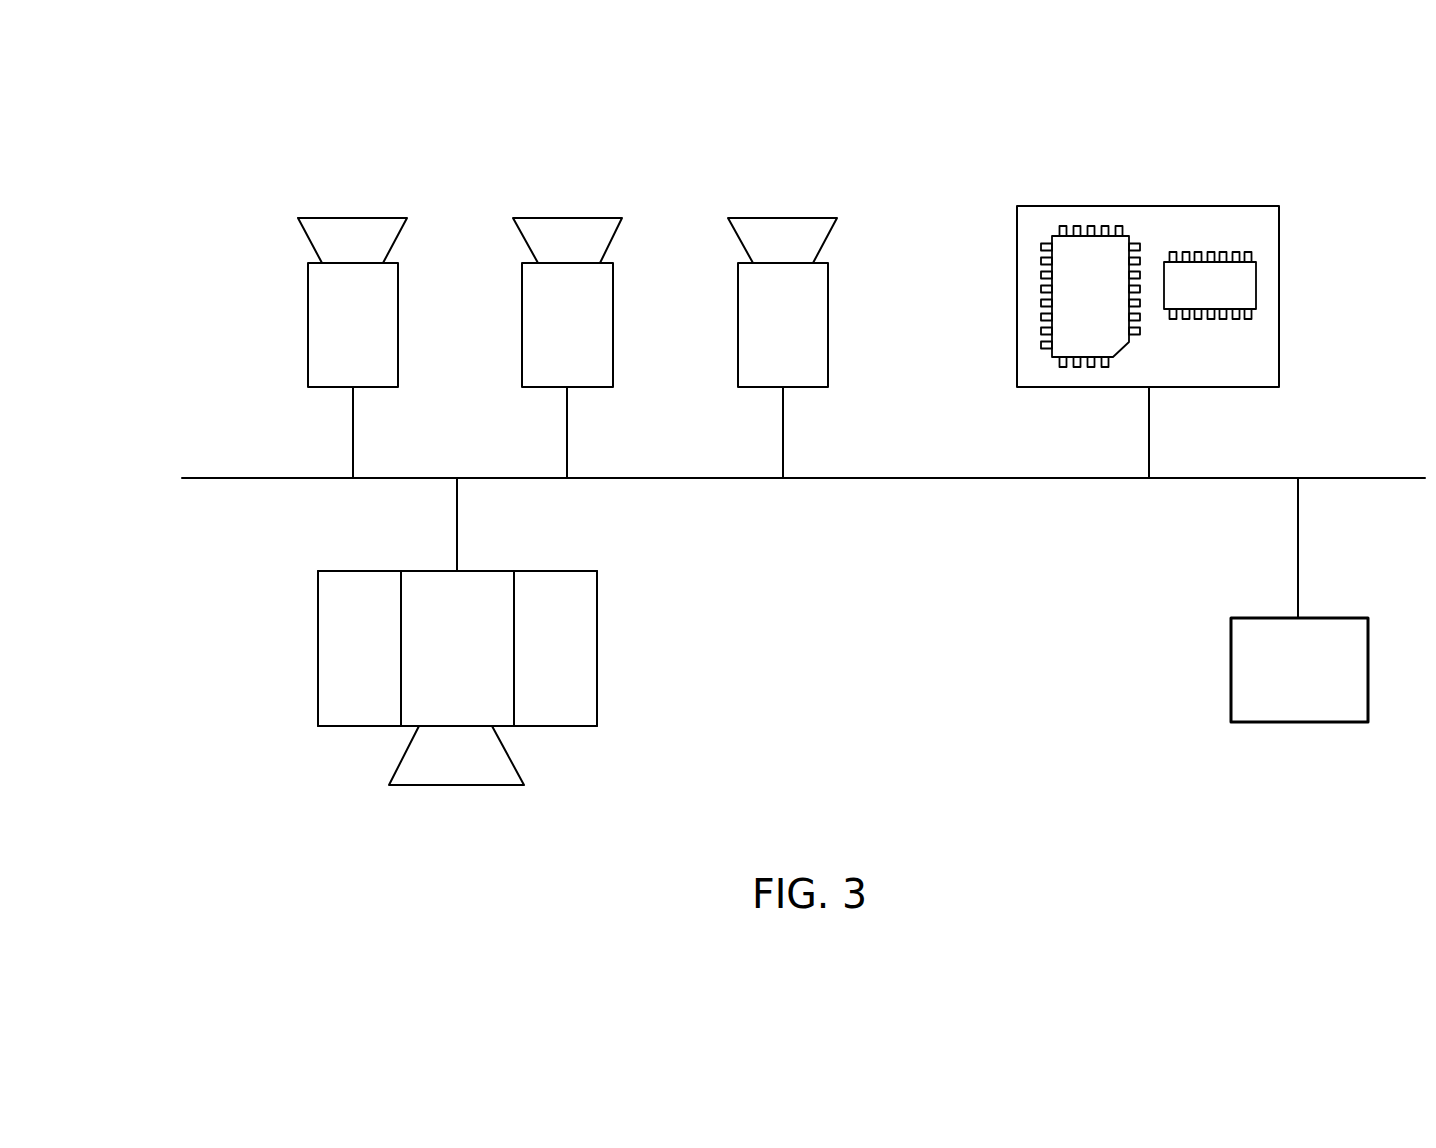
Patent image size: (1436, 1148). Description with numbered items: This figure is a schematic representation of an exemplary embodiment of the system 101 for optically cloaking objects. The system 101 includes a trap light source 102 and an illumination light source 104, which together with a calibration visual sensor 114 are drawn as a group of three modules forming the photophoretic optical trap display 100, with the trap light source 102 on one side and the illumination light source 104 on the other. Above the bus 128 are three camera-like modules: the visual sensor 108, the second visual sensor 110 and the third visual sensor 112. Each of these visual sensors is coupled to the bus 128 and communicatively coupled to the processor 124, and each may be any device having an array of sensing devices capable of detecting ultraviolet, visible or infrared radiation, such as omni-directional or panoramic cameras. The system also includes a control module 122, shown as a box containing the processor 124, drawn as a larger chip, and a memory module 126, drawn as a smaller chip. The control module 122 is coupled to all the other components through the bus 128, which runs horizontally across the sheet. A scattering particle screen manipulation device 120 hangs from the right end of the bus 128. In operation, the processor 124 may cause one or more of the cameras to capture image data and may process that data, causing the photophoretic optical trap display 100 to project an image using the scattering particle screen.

The photophoretic optical trap display 100 is at (418, 631).
The system 101 is at (179, 130).
The trap light source 102 is at (318, 695).
The illumination light source 104 is at (597, 695).
The visual sensor 108 is at (785, 218).
The second visual sensor 110 is at (570, 218).
The third visual sensor 112 is at (355, 218).
The calibration visual sensor 114 is at (485, 571).
The scattering particle screen manipulation device 120 is at (1321, 682).
The control module 122 is at (1267, 206).
The processor 124 is at (1256, 285).
The memory module 126 is at (1054, 234).
The bus 128 is at (1388, 478).